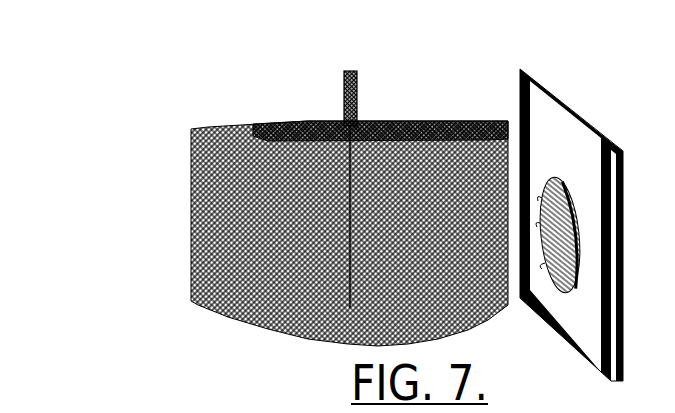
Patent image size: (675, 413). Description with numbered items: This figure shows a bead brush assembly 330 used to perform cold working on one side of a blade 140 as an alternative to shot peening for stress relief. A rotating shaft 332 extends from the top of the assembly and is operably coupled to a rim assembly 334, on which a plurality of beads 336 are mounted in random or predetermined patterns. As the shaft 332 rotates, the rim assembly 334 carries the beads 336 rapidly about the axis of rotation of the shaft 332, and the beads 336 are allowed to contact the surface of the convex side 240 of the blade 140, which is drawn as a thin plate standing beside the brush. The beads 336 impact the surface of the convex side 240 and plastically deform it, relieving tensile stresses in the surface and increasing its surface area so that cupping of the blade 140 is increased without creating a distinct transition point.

The bead brush assembly 330 is at (275, 205).
The rotating shaft 332 is at (333, 90).
The rim assembly 334 is at (250, 125).
The beads 336 is at (193, 242).
The blade 140 is at (533, 203).
The convex side 240 is at (530, 130).